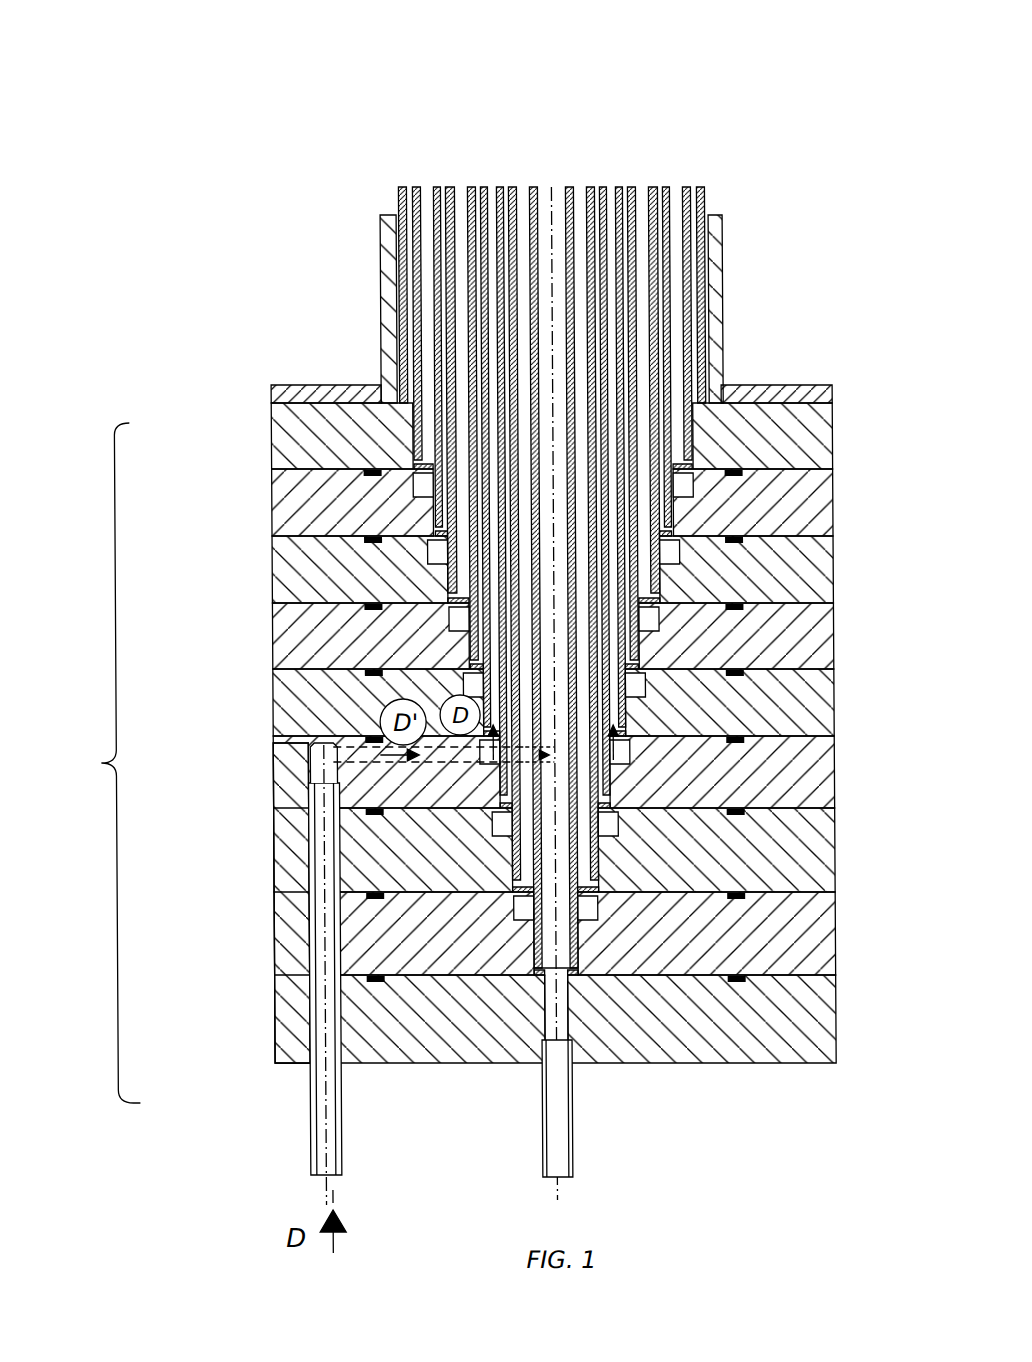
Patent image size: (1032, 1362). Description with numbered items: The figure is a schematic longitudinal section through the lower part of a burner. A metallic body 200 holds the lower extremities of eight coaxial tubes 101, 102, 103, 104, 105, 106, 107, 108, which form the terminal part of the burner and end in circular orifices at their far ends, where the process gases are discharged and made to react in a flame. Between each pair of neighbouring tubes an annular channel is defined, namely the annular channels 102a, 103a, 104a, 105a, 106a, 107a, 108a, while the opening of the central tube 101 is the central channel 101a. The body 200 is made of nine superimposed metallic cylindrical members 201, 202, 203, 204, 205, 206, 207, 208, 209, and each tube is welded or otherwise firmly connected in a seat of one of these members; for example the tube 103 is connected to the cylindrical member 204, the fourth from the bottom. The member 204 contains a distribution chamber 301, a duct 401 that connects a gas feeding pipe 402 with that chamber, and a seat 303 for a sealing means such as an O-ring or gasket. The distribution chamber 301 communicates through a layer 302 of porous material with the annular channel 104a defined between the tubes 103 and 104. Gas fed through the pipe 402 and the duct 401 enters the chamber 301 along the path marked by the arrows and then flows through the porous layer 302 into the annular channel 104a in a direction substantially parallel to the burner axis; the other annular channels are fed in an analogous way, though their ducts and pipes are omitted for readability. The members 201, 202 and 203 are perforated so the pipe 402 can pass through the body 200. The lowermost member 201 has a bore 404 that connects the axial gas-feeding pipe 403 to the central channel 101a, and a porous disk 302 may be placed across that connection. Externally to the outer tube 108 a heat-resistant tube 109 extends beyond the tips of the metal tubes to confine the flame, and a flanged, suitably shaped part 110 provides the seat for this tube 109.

The central tube 101 is at (567, 187).
The central channel 101a is at (550, 187).
The second coaxial tube 102 is at (573, 187).
The annular channel 102a is at (527, 187).
The third coaxial tube 103 is at (588, 187).
The annular channel 103a is at (505, 187).
The fourth coaxial tube 104 is at (603, 187).
The annular channel 104a is at (492, 187).
The fifth coaxial tube 105 is at (632, 187).
The annular channel 105a is at (473, 187).
The sixth coaxial tube 106 is at (657, 187).
The annular channel 106a is at (438, 187).
The seventh coaxial tube 107 is at (668, 187).
The annular channel 107a is at (423, 187).
The outer tube 108 is at (685, 187).
The annular channel 108a is at (398, 187).
The heat resistant tube 109 is at (707, 203).
The shaped part 110 is at (810, 380).
The metallic body 200 is at (90, 763).
The lowermost cylindrical member 201 is at (812, 1045).
The cylindrical member 202 is at (812, 965).
The cylindrical member 203 is at (812, 875).
The cylindrical member 204 is at (812, 795).
The cylindrical member 205 is at (812, 690).
The cylindrical member 206 is at (812, 655).
The cylindrical member 207 is at (812, 590).
The cylindrical member 208 is at (812, 522).
The uppermost cylindrical member 209 is at (812, 455).
The distribution chamber 301 is at (630, 758).
The porous material layer 302 is at (640, 740).
The seat 303 is at (637, 980).
The duct 401 is at (273, 720).
The gas feeding pipe 402 is at (330, 1112).
The axial gas-feeding pipe 403 is at (556, 1100).
The bore 404 is at (543, 1025).